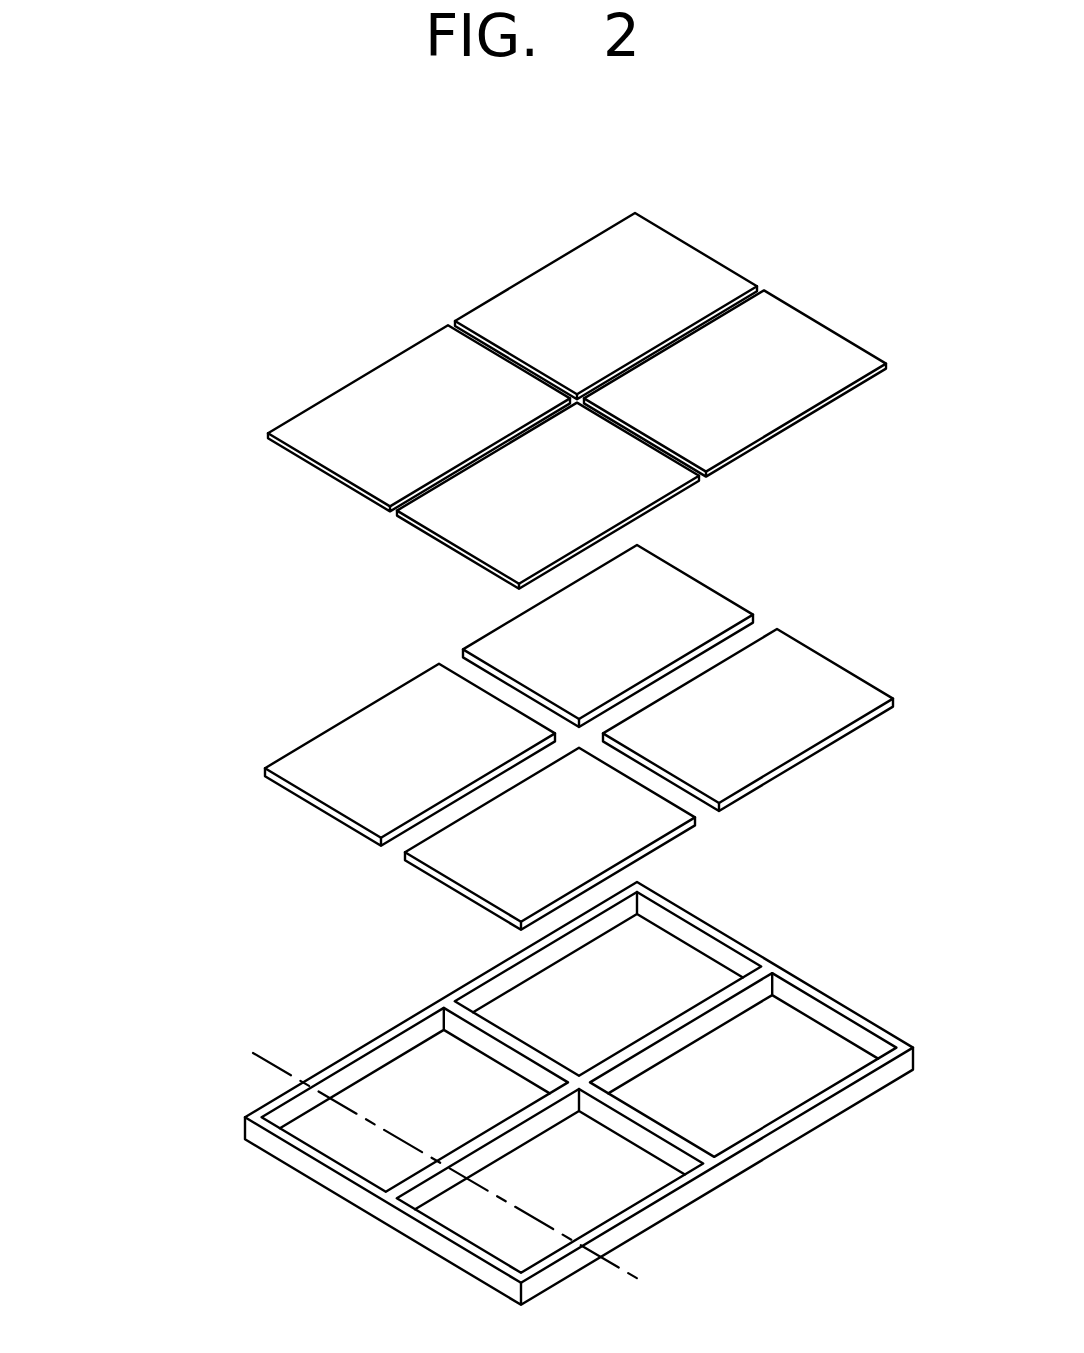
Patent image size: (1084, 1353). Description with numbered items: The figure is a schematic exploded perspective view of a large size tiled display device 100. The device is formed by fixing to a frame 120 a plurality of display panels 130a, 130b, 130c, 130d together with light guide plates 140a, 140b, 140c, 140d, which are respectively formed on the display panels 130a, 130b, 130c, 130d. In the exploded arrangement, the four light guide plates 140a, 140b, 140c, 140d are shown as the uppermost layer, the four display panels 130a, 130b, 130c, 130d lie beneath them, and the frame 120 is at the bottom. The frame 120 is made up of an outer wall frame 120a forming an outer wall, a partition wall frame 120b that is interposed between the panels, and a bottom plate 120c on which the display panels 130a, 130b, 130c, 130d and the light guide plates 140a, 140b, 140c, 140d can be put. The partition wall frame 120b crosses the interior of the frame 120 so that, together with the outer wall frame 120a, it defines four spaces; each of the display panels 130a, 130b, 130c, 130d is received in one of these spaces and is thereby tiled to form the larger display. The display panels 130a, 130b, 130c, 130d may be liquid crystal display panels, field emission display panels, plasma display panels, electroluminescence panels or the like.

The tiled display device 100 is at (198, 735).
The frame 120 is at (580, 1094).
The outer wall frame 120a is at (677, 1204).
The partition wall frame 120b is at (680, 1128).
The bottom plate 120c is at (472, 1222).
The display panel 130a is at (682, 593).
The display panel 130b is at (806, 674).
The display panel 130c is at (460, 858).
The display panel 130d is at (334, 780).
The light guide plate 140a is at (682, 258).
The light guide plate 140b is at (806, 340).
The light guide plate 140c is at (463, 526).
The light guide plate 140d is at (334, 450).